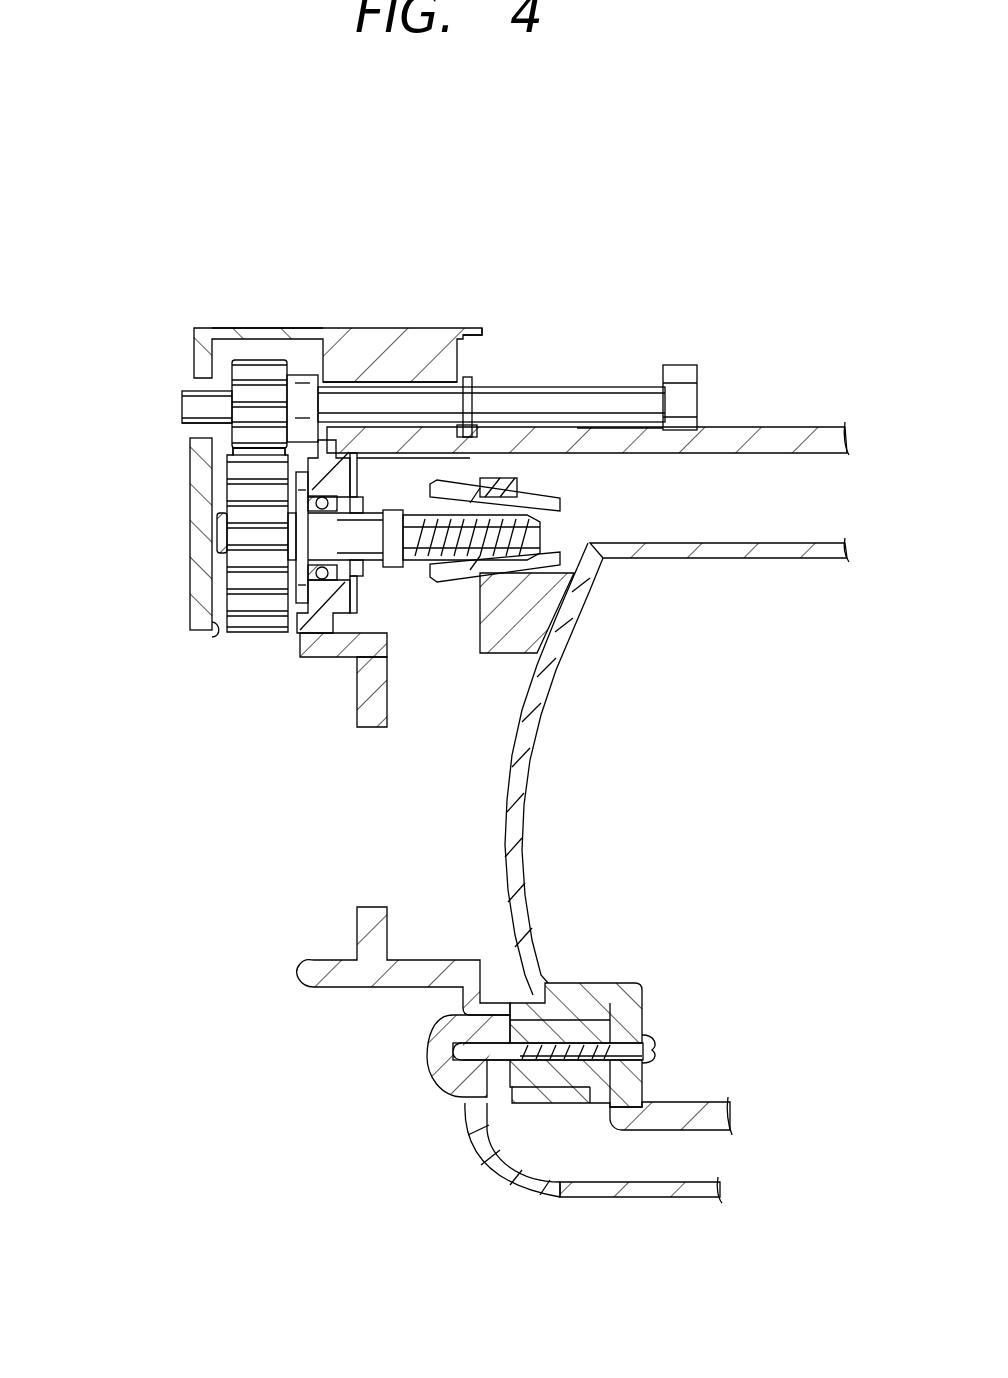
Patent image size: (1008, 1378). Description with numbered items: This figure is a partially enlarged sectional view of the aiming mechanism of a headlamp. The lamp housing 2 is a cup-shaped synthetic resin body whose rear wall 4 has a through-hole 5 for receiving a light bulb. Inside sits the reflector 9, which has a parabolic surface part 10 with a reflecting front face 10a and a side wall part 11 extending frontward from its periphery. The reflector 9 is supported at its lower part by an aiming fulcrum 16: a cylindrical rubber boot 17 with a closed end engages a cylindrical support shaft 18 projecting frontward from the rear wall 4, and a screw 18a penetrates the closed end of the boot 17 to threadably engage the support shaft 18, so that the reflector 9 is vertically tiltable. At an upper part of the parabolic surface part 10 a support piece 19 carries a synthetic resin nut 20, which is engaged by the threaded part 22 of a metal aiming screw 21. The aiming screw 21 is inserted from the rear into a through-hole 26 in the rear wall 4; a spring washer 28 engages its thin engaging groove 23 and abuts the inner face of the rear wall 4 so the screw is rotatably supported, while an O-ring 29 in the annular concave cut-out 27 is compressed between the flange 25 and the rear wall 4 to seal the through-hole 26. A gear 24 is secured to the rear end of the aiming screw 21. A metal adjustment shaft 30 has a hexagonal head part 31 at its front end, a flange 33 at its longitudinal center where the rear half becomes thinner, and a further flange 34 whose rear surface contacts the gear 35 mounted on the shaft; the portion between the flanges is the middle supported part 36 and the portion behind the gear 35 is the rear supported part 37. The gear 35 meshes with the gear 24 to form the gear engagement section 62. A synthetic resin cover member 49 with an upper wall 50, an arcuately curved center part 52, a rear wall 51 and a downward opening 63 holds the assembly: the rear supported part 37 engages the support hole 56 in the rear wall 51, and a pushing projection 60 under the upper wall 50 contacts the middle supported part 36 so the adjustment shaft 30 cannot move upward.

The lamp housing 2 is at (700, 1198).
The rear wall 4 is at (357, 700).
The through-hole 5 is at (372, 727).
The reflector 9 is at (797, 558).
The parabolic surface part 10 is at (575, 769).
The front face 10a is at (535, 738).
The side wall part 11 is at (670, 1107).
The aiming fulcrum 16 is at (541, 1120).
The cylindrical boot 17 is at (593, 1092).
The support shaft 18 is at (604, 999).
The screw 18a is at (648, 1047).
The support piece 19 is at (513, 485).
The nut 20 is at (455, 587).
The aiming screw 21 is at (393, 600).
The threaded part 22 is at (513, 530).
The engaging groove 23 is at (338, 640).
The gear 24 is at (240, 630).
The flange 25 is at (250, 630).
The through-hole 26 is at (297, 557).
The concave cut-out 27 is at (295, 527).
The spring washer 28 is at (400, 458).
The O-ring 29 is at (300, 605).
The adjustment shaft 30 is at (640, 397).
The head part 31 is at (697, 397).
The flange 33 is at (472, 380).
The flange 34 is at (310, 375).
The gear 35 is at (235, 342).
The middle supported part 36 is at (387, 410).
The rear supported part 37 is at (195, 412).
The cover member 49 is at (270, 328).
The upper wall 50 is at (480, 325).
The rear wall 51 is at (190, 588).
The center part 52 is at (465, 377).
The support hole 56 is at (190, 417).
The pushing projection 60 is at (417, 357).
The gear engagement section 62 is at (235, 450).
The opening 63 is at (217, 637).